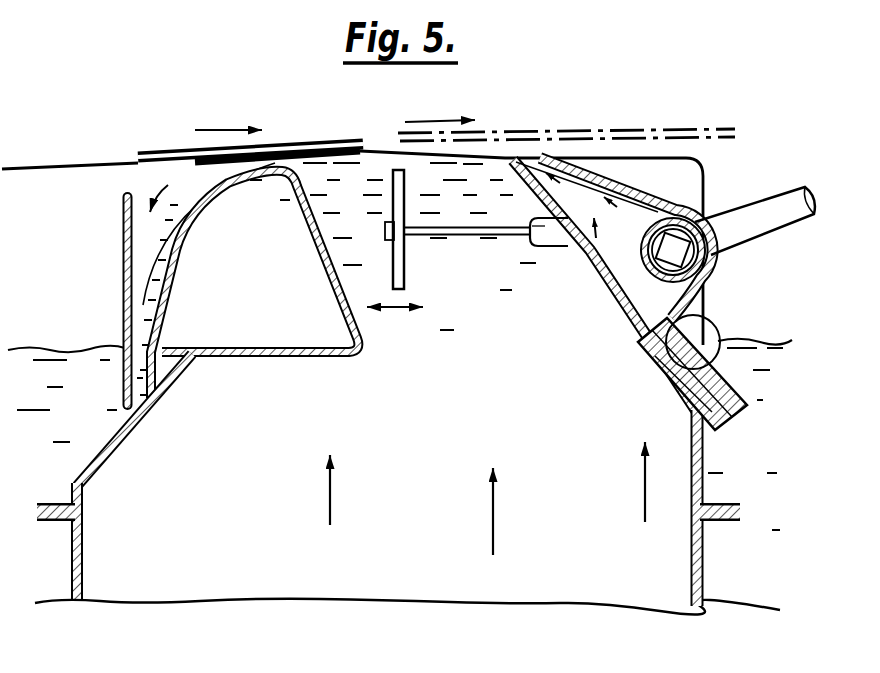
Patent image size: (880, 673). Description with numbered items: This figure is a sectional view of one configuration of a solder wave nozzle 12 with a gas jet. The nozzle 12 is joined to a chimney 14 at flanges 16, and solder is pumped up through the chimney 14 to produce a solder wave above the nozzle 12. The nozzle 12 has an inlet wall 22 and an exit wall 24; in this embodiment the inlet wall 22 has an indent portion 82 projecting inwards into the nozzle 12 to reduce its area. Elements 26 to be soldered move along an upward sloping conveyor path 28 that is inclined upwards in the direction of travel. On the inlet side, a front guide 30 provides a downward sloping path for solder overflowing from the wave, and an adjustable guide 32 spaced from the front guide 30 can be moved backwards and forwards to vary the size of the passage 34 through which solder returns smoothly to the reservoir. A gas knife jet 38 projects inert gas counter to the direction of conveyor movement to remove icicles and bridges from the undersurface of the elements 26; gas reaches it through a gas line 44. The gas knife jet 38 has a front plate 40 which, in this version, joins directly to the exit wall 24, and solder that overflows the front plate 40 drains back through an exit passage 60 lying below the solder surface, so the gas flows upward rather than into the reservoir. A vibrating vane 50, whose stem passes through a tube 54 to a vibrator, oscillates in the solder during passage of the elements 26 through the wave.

The solder wave nozzle 12 is at (327, 180).
The chimney 14 is at (75, 553).
The flanges 16 is at (713, 522).
The inlet wall 22 is at (120, 440).
The exit wall 24 is at (688, 423).
The elements to be soldered 26 is at (343, 150).
The conveyor path 28 is at (88, 163).
The front guide 30 is at (172, 268).
The adjustable guide 32 is at (122, 247).
The passage 34 is at (143, 322).
The gas knife jet 38 is at (606, 176).
The front plate 40 is at (627, 312).
The gas line 44 is at (748, 232).
The vibrating vane 50 is at (403, 264).
The tube 54 is at (563, 240).
The exit passage 60 is at (735, 415).
The indent portion 82 is at (363, 338).